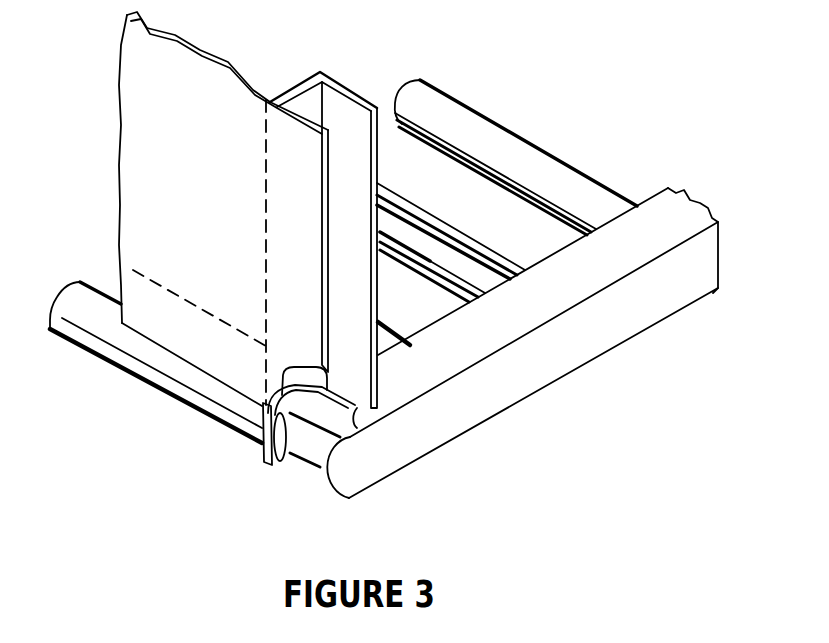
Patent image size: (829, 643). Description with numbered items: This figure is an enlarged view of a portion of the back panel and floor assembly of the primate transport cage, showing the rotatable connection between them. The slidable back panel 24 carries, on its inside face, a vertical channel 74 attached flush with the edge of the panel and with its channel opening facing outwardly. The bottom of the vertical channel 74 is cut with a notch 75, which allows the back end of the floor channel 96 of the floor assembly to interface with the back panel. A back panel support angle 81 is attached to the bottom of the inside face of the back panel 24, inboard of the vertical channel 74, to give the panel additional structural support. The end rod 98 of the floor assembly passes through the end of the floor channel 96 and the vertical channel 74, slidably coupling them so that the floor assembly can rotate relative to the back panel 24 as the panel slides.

The back panel 24 is at (137, 171).
The vertical channel 74 is at (349, 103).
The notch 75 is at (357, 420).
The back panel support angle 81 is at (188, 343).
The floor channel 96 is at (560, 353).
The end rod 98 is at (72, 333).